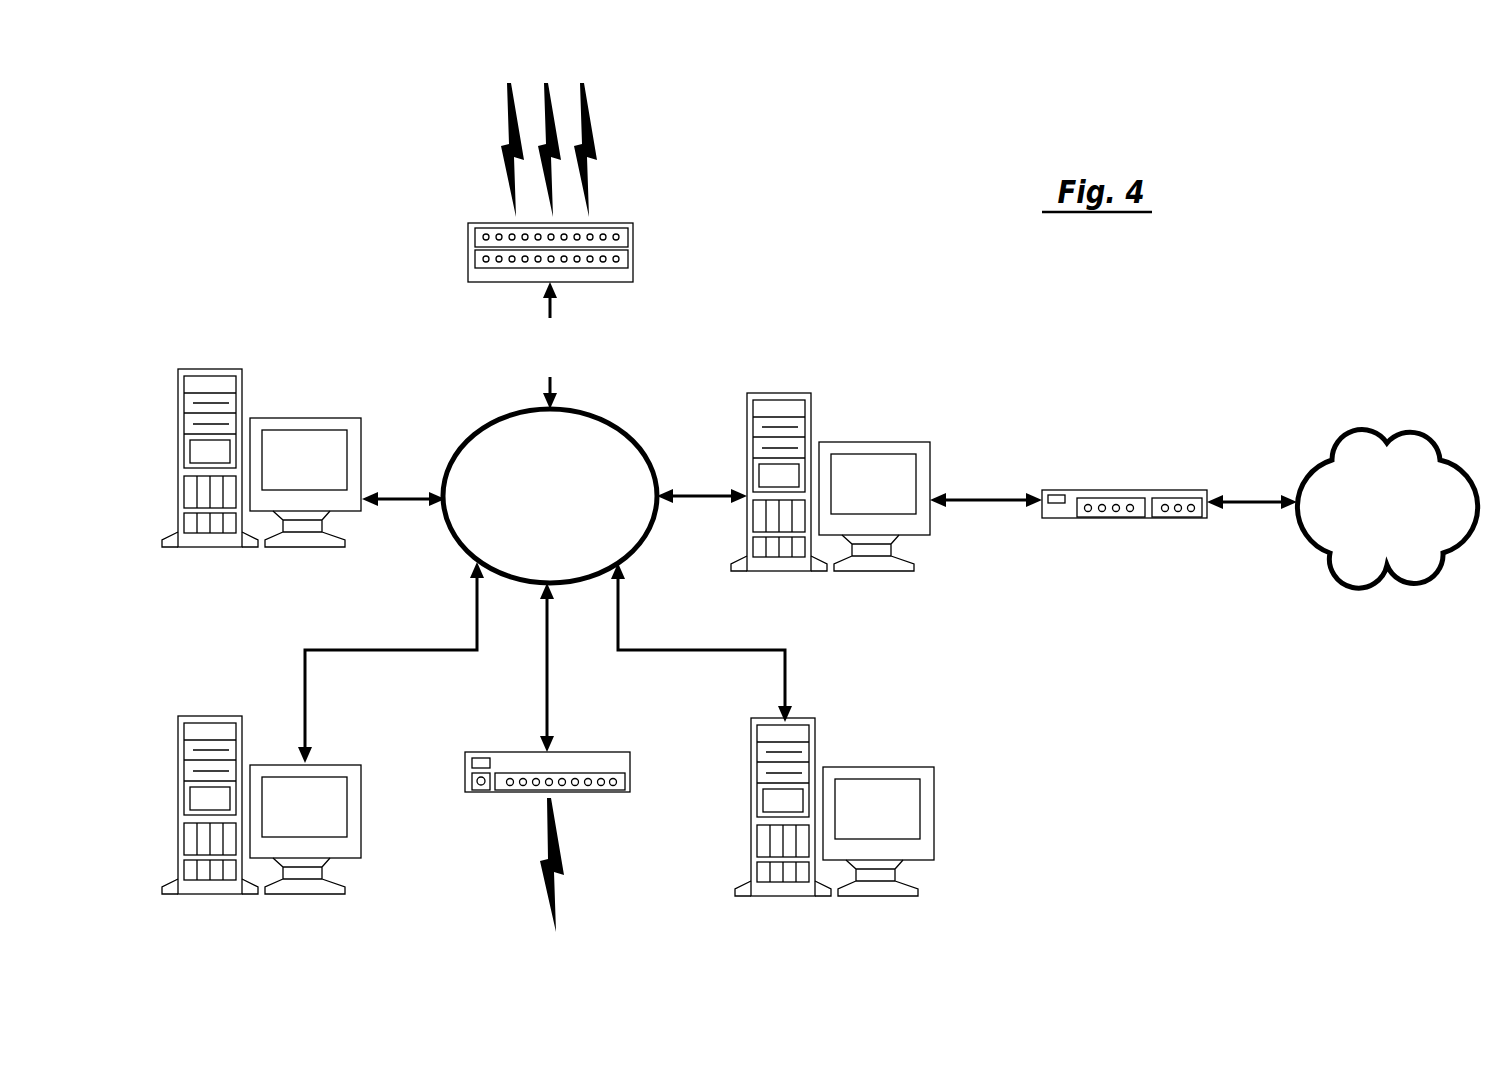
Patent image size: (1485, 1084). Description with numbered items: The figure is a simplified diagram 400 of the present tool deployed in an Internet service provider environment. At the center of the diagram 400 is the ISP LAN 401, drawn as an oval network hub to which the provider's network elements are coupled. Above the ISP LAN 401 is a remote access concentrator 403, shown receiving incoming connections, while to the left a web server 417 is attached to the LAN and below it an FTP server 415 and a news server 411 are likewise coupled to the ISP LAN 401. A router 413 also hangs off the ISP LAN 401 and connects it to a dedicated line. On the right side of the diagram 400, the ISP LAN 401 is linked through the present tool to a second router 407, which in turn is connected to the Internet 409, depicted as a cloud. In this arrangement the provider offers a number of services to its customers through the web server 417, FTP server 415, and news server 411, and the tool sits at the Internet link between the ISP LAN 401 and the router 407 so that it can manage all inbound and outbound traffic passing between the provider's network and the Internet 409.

The diagram 400 is at (814, 338).
The ISP LAN 401 is at (630, 437).
The remote access concentrator 403 is at (633, 253).
The router 407 is at (1113, 490).
The Internet 409 is at (1307, 547).
The news server 411 is at (890, 767).
The router 413 is at (598, 752).
The FTP server 415 is at (342, 765).
The web server 417 is at (310, 418).